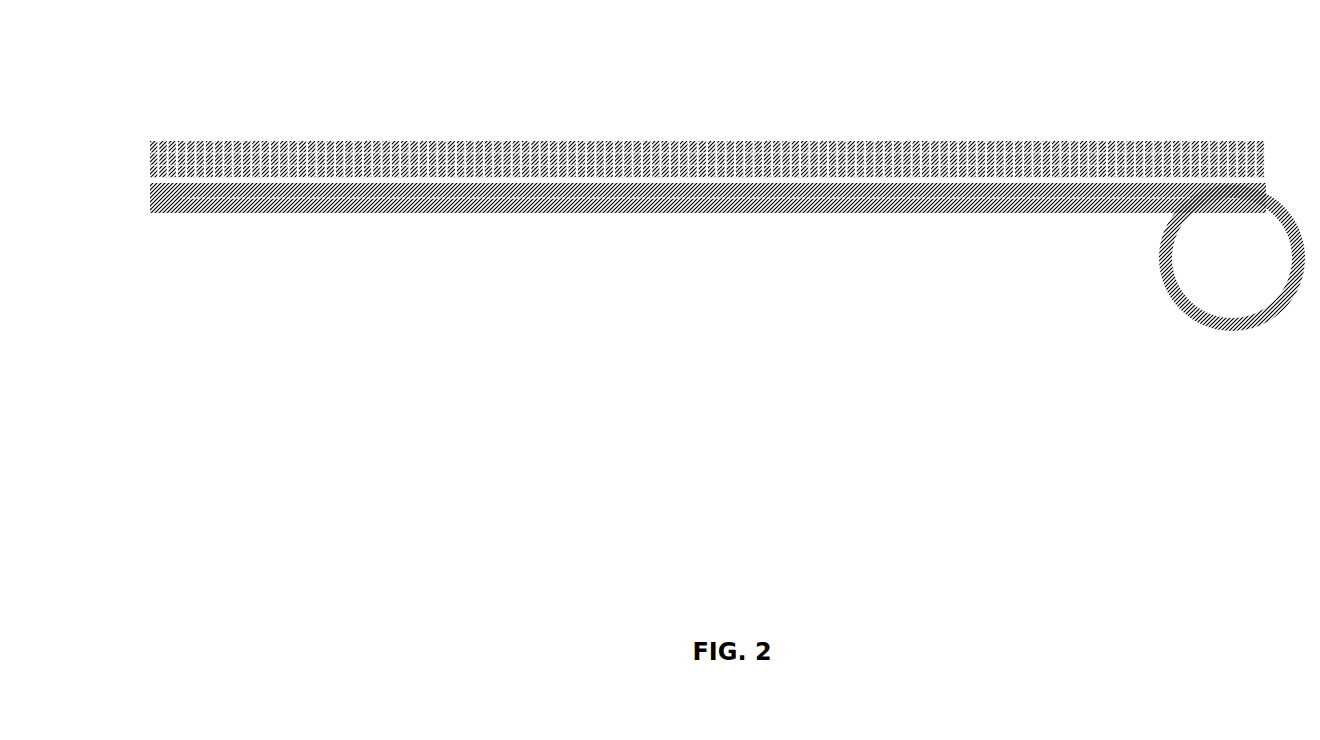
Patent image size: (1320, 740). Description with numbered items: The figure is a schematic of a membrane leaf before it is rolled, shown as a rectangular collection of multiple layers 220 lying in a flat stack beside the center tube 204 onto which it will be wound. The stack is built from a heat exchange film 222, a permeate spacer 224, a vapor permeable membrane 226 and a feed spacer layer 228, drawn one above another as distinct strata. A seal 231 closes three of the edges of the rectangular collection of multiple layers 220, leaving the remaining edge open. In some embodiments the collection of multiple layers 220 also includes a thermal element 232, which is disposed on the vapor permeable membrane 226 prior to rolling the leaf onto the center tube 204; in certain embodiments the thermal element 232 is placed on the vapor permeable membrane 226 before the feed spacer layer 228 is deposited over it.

The collection of multiple layers 220 is at (665, 175).
The feed spacer layer 228 is at (190, 143).
The thermal element 232 is at (345, 150).
The vapor permeable membrane 226 is at (655, 182).
The permeate spacer 224 is at (392, 212).
The heat exchange film 222 is at (683, 212).
The seal 231 is at (177, 215).
The center tube 204 is at (1163, 282).